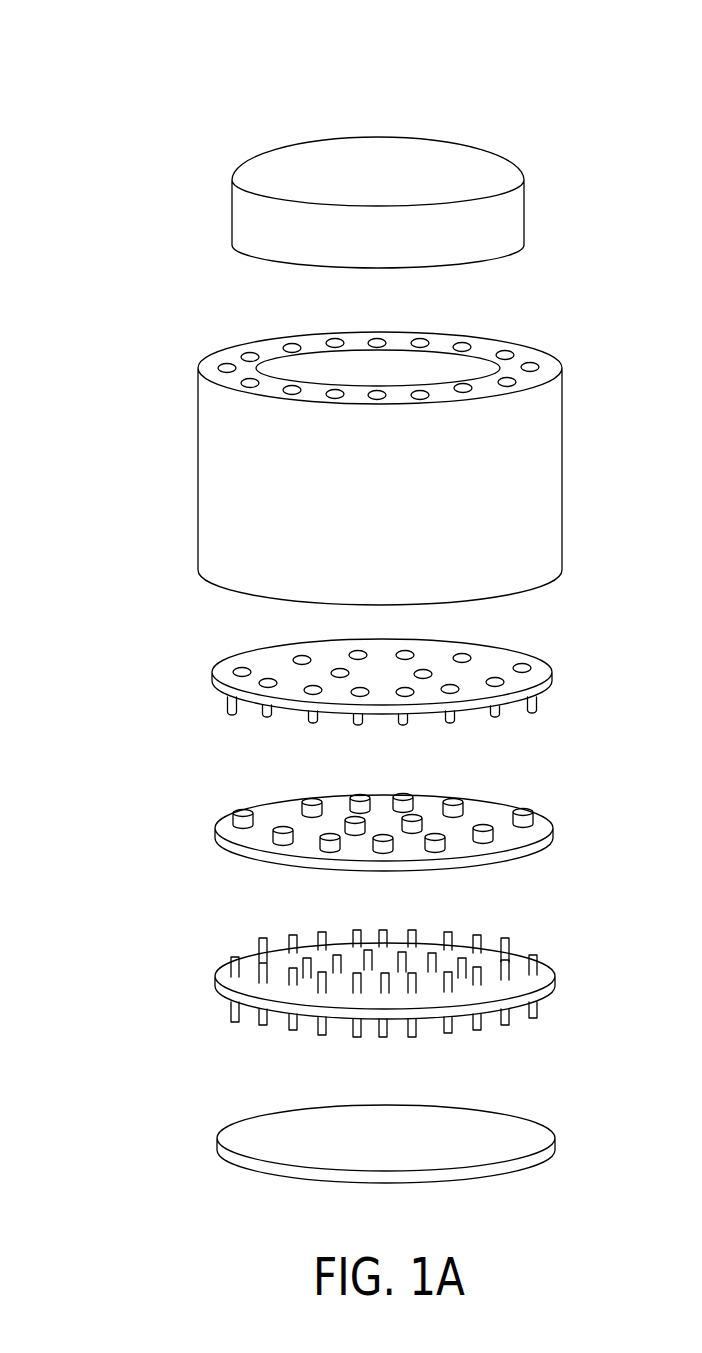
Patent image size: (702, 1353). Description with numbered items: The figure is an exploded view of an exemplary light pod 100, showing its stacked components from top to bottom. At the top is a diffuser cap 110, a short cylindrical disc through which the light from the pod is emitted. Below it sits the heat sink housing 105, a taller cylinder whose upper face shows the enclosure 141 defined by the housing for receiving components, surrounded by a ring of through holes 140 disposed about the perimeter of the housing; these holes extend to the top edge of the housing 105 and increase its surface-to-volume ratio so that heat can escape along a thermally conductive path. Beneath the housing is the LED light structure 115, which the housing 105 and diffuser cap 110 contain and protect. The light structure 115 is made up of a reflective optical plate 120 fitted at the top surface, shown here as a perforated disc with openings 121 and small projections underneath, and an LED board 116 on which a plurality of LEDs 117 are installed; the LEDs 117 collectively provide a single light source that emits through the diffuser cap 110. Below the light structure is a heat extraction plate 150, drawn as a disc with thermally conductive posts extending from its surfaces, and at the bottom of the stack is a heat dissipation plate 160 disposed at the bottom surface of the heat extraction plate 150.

The light pod 100 is at (214, 51).
The diffuser cap 110 is at (232, 218).
The heat sink housing 105 is at (198, 485).
The enclosure 141 is at (433, 365).
The through holes 140 is at (529, 363).
The LED light structure 115 is at (108, 636).
The reflective optical plate 120 is at (213, 680).
The hole 121 is at (463, 659).
The LED board 116 is at (215, 835).
The LEDs 117 is at (523, 808).
The heat extraction plate 150 is at (215, 985).
The heat dissipation plate 160 is at (217, 1145).